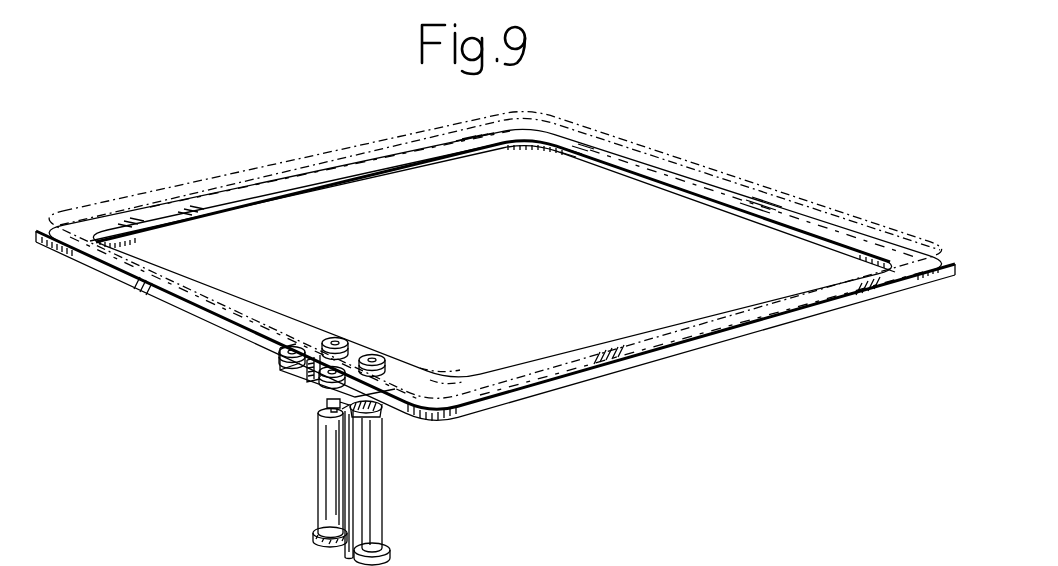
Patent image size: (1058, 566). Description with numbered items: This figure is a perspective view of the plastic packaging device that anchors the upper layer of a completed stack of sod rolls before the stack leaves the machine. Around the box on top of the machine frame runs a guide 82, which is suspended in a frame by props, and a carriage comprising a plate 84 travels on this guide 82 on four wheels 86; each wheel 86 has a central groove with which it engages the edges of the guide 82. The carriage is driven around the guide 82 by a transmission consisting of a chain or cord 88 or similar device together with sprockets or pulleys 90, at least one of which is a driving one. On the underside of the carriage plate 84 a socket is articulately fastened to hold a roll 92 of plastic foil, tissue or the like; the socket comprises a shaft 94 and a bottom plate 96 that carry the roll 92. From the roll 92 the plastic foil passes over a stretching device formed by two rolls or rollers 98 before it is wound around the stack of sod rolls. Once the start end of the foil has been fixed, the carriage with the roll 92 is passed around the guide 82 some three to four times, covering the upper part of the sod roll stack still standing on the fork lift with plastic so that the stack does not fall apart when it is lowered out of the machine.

The guide 82 is at (220, 323).
The bracket plate 84 is at (285, 378).
The rollers 86 is at (343, 338).
The chain or cord 88 is at (152, 276).
The sprockets or pulleys 90 is at (438, 374).
The roll of plastic foil 92 is at (330, 461).
The shaft 94 is at (327, 403).
The bottom plate 96 is at (316, 538).
The rolls or rollers 98 is at (367, 485).